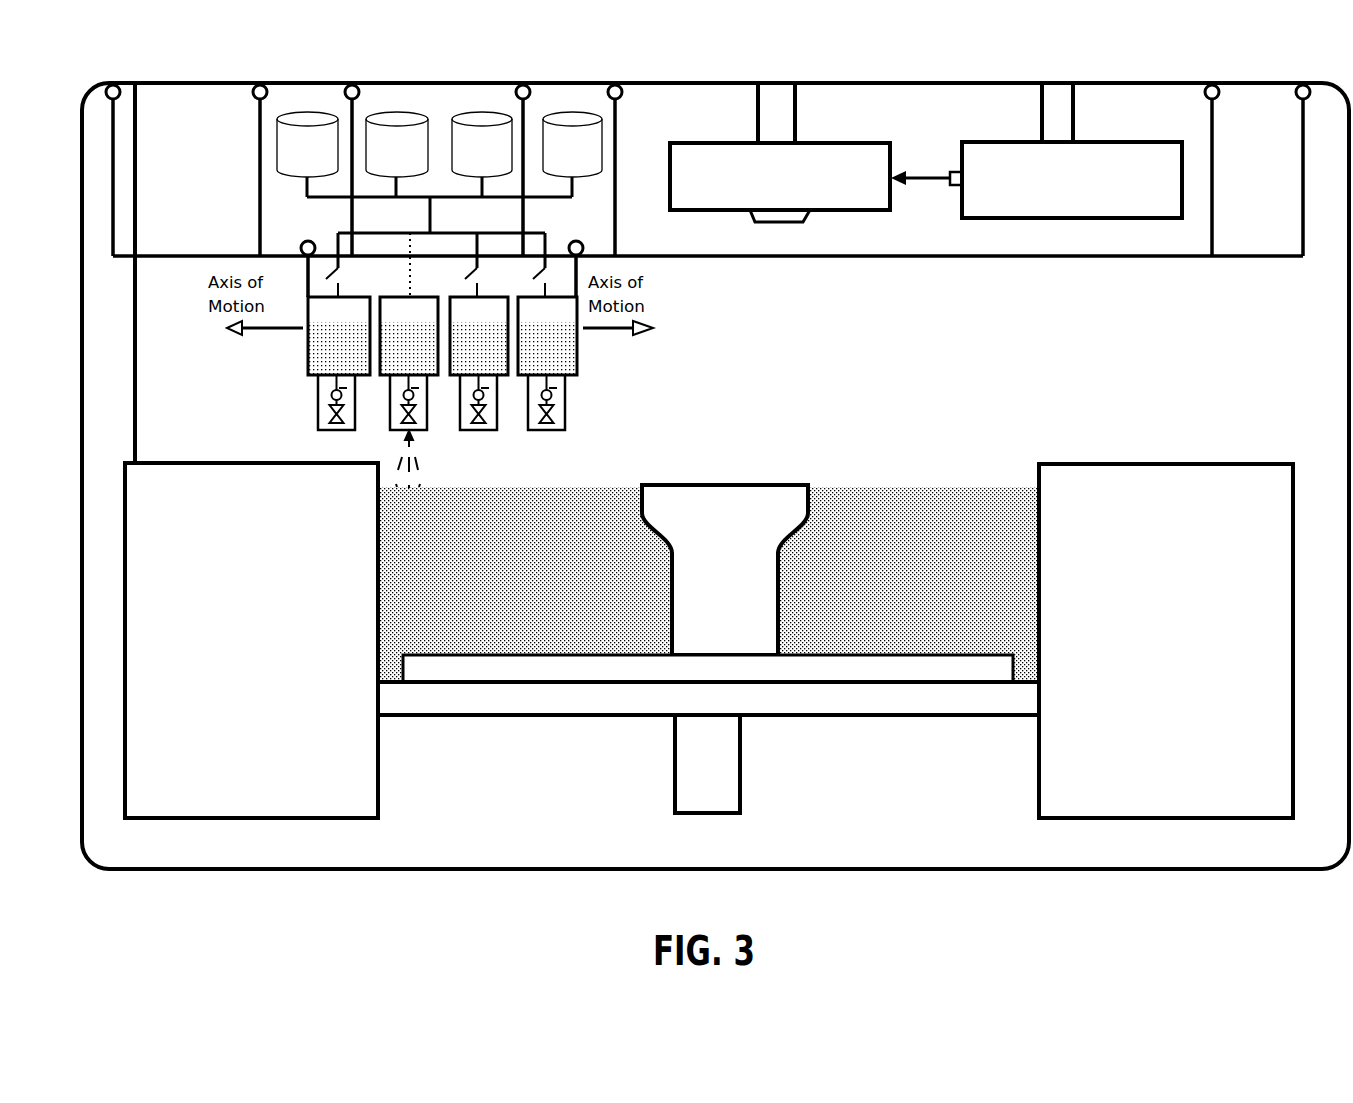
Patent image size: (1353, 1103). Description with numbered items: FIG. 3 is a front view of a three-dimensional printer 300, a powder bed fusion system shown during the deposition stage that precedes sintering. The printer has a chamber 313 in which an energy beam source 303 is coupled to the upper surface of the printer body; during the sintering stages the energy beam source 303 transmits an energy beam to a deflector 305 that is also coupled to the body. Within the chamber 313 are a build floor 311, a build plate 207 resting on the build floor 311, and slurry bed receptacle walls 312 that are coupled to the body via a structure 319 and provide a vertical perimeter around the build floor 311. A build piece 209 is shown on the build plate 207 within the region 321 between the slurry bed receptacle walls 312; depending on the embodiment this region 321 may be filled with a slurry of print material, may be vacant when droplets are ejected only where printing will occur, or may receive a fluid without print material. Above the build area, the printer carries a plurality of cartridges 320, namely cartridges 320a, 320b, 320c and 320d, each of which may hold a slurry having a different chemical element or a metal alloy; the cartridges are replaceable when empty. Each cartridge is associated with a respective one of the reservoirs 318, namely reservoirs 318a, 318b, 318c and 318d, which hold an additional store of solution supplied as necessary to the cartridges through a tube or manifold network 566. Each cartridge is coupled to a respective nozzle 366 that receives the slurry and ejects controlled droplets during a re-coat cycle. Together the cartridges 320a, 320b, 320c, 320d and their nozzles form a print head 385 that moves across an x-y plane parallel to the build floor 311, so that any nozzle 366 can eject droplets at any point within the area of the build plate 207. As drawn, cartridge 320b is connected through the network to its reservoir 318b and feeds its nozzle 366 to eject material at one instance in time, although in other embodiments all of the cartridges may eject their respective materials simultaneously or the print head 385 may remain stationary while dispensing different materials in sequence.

The 3-D printer 300 is at (1118, 910).
The chamber 313 is at (715, 476).
The structure 319 is at (130, 433).
The reservoirs 318 is at (390, 118).
The reservoir 318a is at (307, 144).
The reservoir 318b is at (397, 144).
The reservoir 318c is at (482, 144).
The reservoir 318d is at (572, 144).
The manifold / feed line 566 is at (435, 247).
The print head 385 is at (272, 365).
The cartridges 320 is at (580, 335).
The cartridge 320a is at (339, 336).
The cartridge 320b is at (409, 336).
The cartridge 320c is at (479, 336).
The cartridge 320d is at (547, 336).
The nozzle 366 is at (572, 392).
The deflector 305 is at (780, 152).
The energy beam source 303 is at (1036, 150).
The region 321 is at (985, 508).
The build piece 209 is at (793, 483).
The build plate 207 is at (988, 655).
The build floor 311 is at (792, 716).
The slurry bed receptacle walls 312 is at (709, 640).